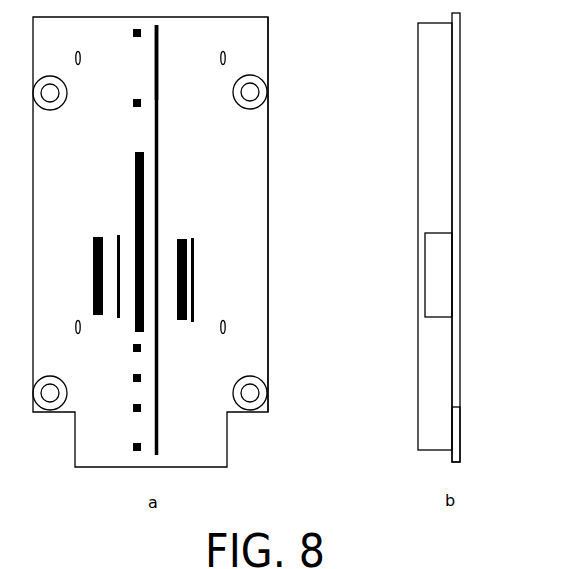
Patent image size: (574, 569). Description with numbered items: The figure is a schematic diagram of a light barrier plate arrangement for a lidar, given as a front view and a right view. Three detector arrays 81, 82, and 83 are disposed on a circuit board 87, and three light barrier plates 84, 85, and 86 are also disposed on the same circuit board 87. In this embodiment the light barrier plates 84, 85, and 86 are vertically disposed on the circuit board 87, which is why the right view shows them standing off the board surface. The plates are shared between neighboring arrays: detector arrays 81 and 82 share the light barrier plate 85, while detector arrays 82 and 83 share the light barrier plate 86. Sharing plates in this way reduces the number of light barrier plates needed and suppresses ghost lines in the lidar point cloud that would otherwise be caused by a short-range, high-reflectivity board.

The detector array 81 is at (185, 226).
The detector array 82 is at (137, 150).
The detector array 83 is at (96, 234).
The light barrier plate 84 is at (198, 270).
The light barrier plate 85 is at (158, 100).
The light barrier plate 86 is at (117, 233).
The circuit board 87 is at (253, 158).